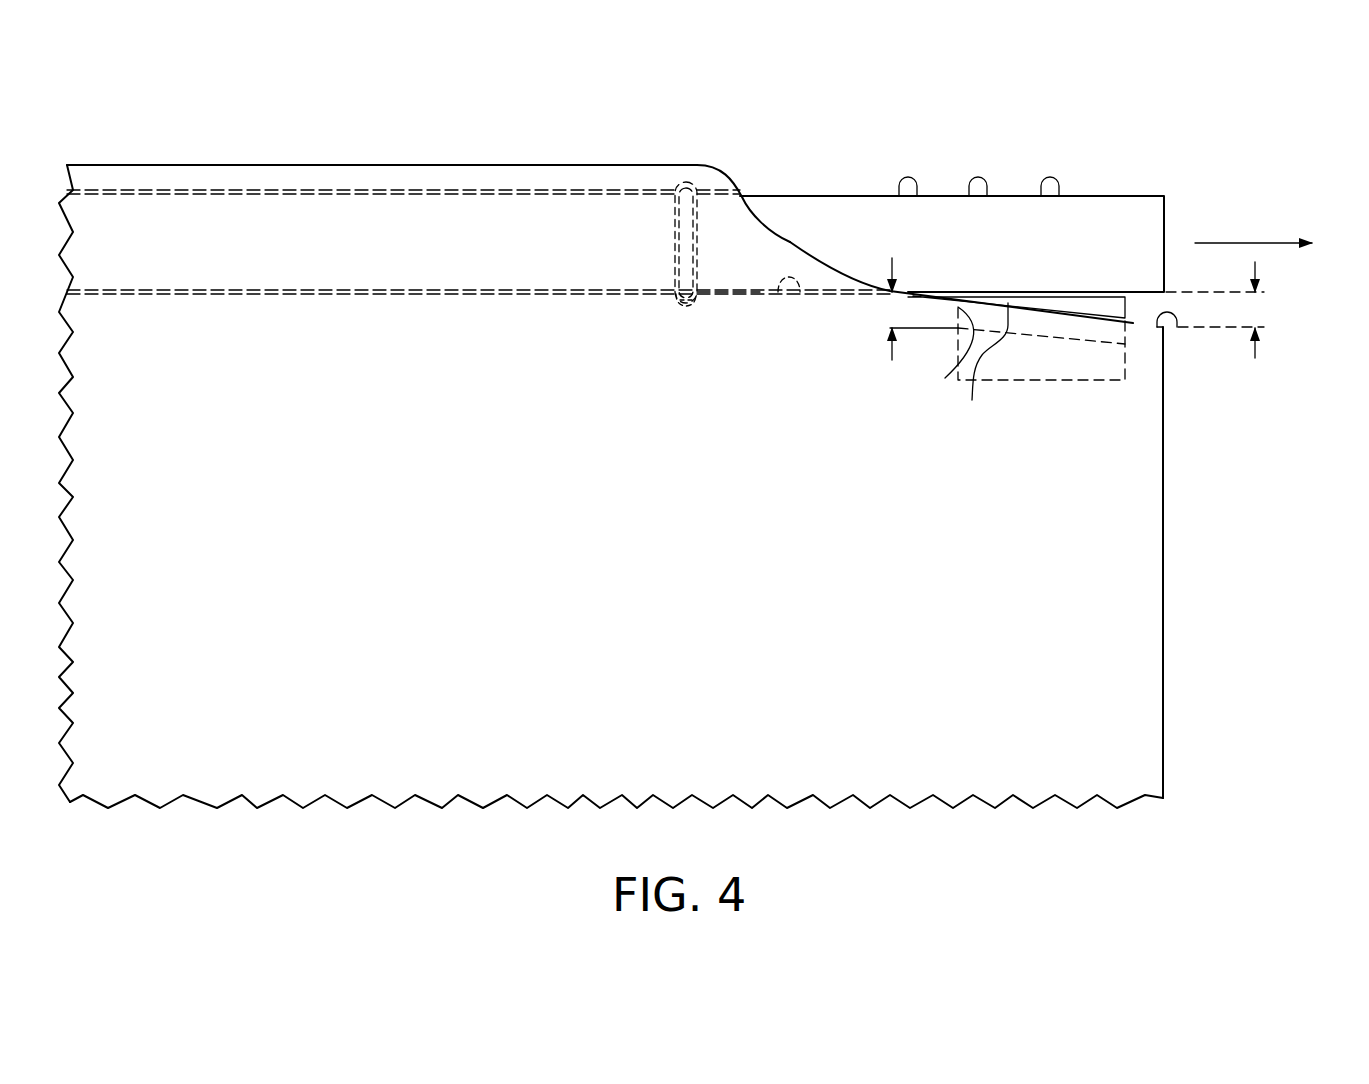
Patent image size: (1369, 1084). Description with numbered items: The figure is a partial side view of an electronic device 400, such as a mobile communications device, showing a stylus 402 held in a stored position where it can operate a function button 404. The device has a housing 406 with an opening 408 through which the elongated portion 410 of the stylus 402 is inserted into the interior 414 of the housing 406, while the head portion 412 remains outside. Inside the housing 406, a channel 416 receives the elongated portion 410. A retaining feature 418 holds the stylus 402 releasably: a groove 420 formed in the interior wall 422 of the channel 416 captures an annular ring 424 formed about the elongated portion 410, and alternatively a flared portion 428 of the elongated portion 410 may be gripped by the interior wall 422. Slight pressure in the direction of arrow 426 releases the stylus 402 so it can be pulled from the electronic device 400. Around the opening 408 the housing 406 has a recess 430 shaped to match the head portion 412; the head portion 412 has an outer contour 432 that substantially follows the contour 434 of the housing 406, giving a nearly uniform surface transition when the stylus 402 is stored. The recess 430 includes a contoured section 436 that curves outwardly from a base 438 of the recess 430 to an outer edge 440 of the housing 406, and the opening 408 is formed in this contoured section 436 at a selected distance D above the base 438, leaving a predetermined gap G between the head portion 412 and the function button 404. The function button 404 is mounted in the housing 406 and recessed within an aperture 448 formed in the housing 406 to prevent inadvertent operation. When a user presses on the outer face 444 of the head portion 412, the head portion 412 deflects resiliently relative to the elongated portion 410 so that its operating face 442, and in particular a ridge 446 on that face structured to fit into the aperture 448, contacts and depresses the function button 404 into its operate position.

The electronic device 400 is at (1168, 500).
The stylus 402 is at (1175, 200).
The function button 404 is at (1072, 382).
The housing 406 is at (1166, 462).
The opening 408 is at (774, 221).
The elongated portion 410 is at (338, 296).
The head portion 412 is at (1166, 230).
The interior 414 is at (527, 377).
The channel 416 is at (392, 297).
The feature 418 is at (687, 313).
The groove 420 is at (670, 306).
The interior wall 422 is at (798, 296).
The annular ring 424 is at (674, 242).
The arrow 426 is at (1272, 248).
The flared portion 428 is at (741, 296).
The recess 430 is at (1077, 298).
The outer contour 432 is at (864, 194).
The contour 434 is at (460, 164).
The contoured section 436 is at (820, 266).
The base 438 is at (1172, 328).
The outer edge 440 is at (695, 164).
The operating face 442 is at (978, 366).
The outer face 444 is at (1088, 195).
The ridge 446 is at (1150, 294).
The aperture 448 is at (958, 366).